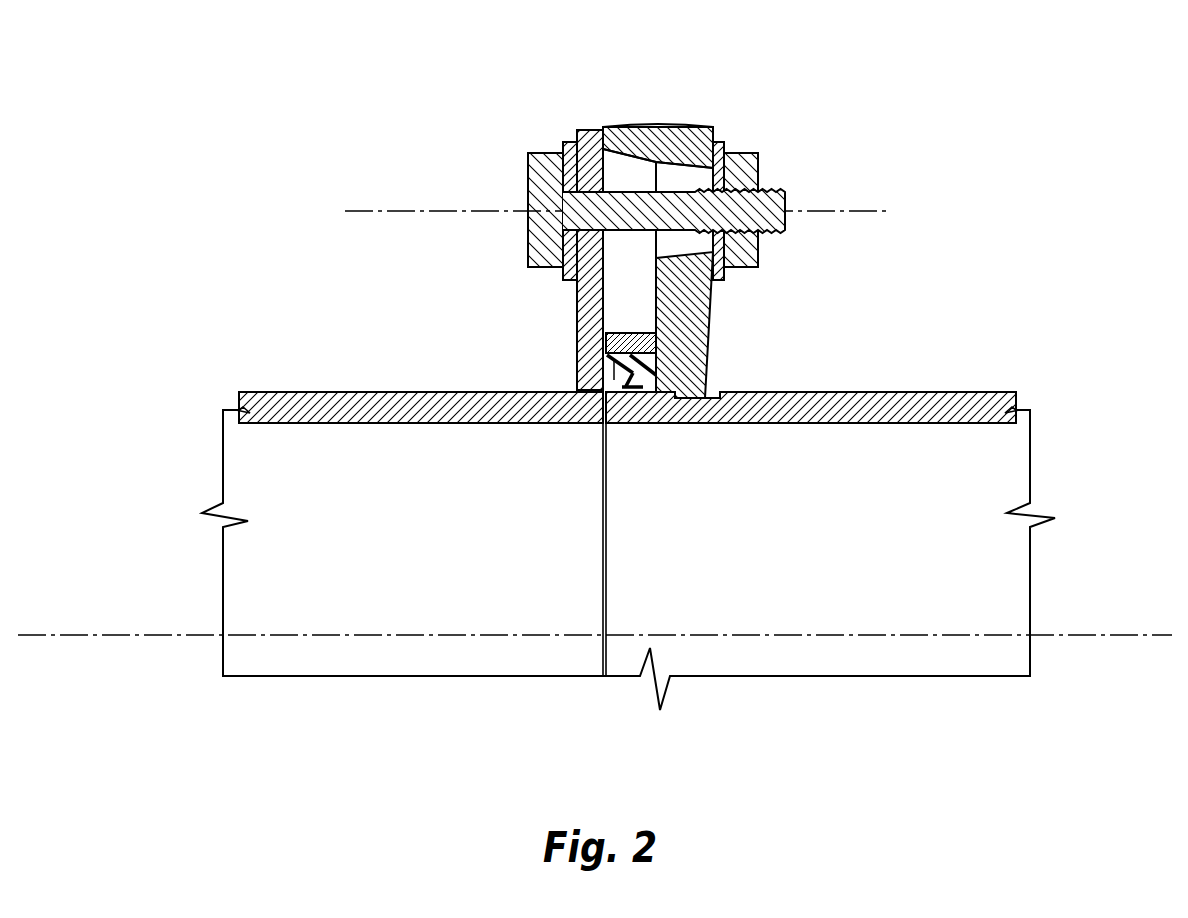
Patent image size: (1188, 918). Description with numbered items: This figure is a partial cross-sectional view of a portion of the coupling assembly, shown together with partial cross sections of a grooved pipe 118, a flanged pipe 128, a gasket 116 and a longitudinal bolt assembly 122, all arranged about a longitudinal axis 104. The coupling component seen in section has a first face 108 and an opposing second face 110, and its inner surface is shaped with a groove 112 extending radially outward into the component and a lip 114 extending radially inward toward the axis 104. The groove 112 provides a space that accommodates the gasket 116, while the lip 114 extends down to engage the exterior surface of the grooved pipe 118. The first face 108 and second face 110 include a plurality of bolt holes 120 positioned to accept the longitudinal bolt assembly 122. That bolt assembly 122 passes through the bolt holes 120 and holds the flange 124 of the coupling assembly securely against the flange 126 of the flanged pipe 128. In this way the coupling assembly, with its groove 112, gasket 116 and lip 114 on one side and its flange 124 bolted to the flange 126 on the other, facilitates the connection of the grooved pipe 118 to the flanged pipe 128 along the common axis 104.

The longitudinal axis 104 is at (1120, 635).
The first face 108 is at (628, 130).
The second face 110 is at (695, 298).
The groove 112 is at (647, 347).
The lip 114 is at (720, 395).
The gasket 116 is at (605, 363).
The grooved pipe 118 is at (962, 408).
The bolt holes 120 is at (703, 125).
The longitudinal bolt assembly 122 is at (767, 138).
The flange 124 is at (690, 175).
The flange 126 is at (588, 130).
The flanged pipe 128 is at (275, 408).